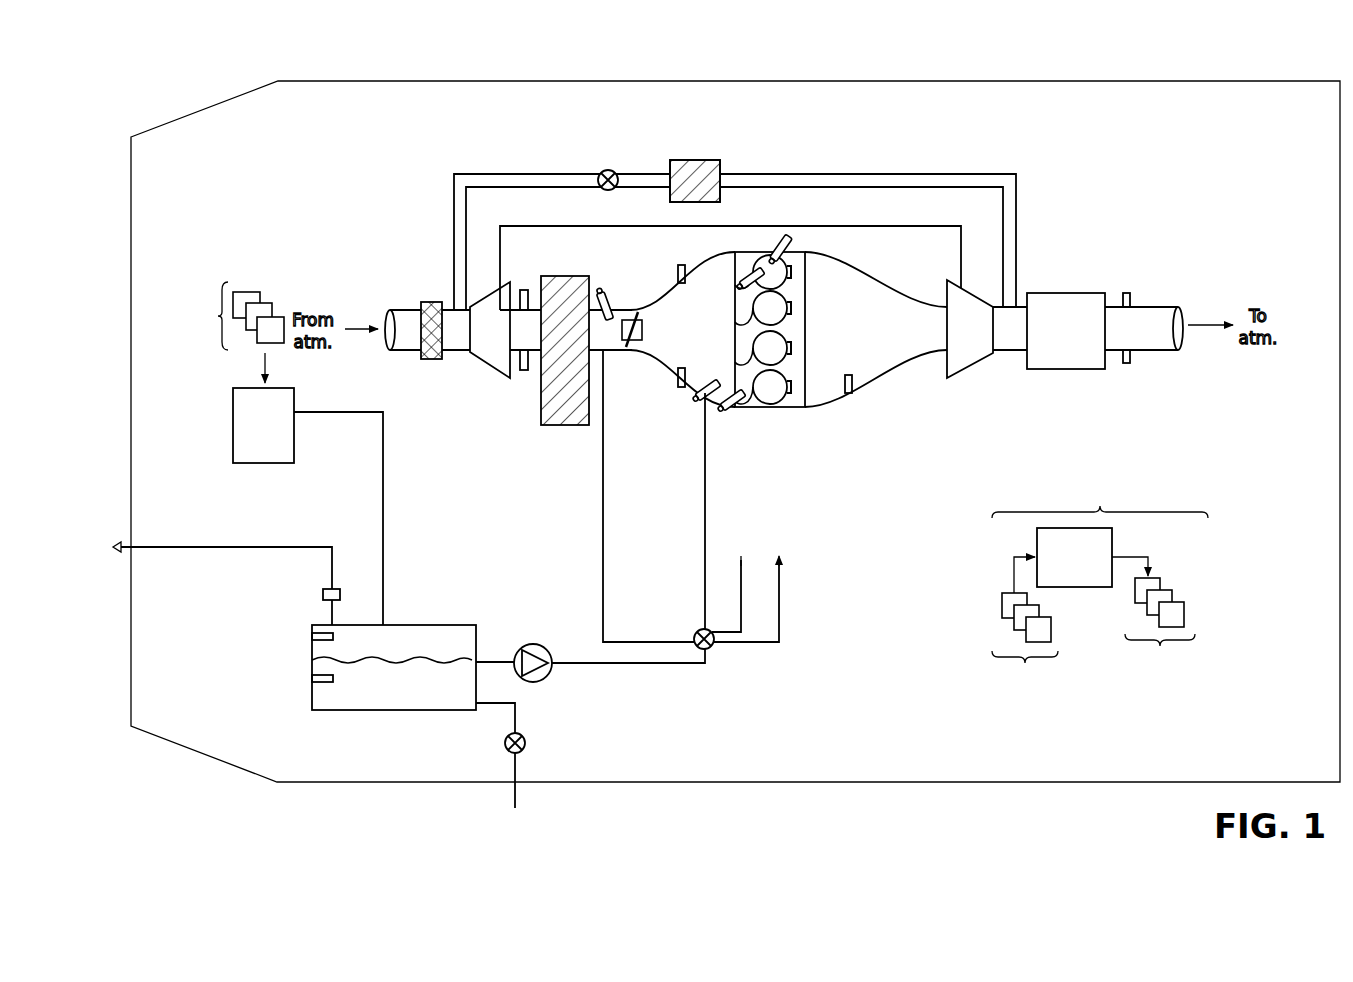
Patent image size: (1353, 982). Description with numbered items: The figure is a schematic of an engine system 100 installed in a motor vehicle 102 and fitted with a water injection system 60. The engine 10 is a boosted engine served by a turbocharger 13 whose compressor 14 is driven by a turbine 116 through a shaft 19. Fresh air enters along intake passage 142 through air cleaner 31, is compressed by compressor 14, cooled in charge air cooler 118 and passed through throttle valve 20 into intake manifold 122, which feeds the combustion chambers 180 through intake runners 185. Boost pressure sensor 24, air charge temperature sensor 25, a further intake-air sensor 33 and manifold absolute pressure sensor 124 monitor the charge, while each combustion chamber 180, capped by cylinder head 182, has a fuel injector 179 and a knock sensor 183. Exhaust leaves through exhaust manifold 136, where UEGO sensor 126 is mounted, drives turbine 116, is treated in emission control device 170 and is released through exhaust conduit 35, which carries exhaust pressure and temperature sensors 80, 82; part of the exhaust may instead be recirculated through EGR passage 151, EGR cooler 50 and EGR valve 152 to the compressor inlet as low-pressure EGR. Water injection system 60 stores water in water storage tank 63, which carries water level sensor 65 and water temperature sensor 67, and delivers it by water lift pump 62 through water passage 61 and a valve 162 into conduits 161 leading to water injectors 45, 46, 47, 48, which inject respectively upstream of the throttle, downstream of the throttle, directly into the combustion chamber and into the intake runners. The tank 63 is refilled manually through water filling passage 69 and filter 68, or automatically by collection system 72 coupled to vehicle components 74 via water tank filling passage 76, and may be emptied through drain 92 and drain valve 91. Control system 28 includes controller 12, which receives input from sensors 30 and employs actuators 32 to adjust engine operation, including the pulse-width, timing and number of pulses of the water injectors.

The motor vehicle 102 is at (737, 81).
The engine system 100 is at (1095, 133).
The engine 10 is at (758, 281).
The controller 12 is at (1074, 557).
The turbocharger 13 is at (533, 214).
The compressor 14 is at (490, 330).
The shaft 19 is at (885, 227).
The throttle valve 20 is at (643, 335).
The boost pressure sensor 24 is at (525, 370).
The air charge temperature sensor 25 is at (522, 290).
The control system 28 is at (1097, 580).
The sensors 30 is at (1025, 631).
The air cleaner 31 is at (431, 302).
The actuators 32 is at (1160, 622).
The intake manifold sensor 33 is at (678, 270).
The exhaust conduit 35 is at (1165, 307).
The water injector 45 is at (600, 295).
The water injector 46 is at (697, 400).
The water injector 47 is at (745, 288).
The water injector 48 is at (724, 407).
The EGR cooler 50 is at (700, 160).
The water injection system 60 is at (471, 545).
The water passage 61 is at (645, 664).
The water lift pump 62 is at (549, 652).
The water storage tank 63 is at (448, 625).
The water level sensor 65 is at (312, 636).
The water temperature sensor 67 is at (312, 678).
The filter 68 is at (340, 595).
The water filling passage 69 is at (255, 547).
The collection system 72 is at (263, 425).
The vehicle components 74 is at (235, 316).
The water tank filling passage 76 is at (383, 515).
The exhaust pressure sensor 80 is at (1127, 293).
The exhaust temperature sensor 82 is at (1127, 364).
The drain valve 91 is at (525, 743).
The drain 92 is at (518, 718).
The turbine 116 is at (970, 329).
The charge air cooler 118 is at (562, 276).
The intake manifold 122 is at (682, 329).
The manifold absolute pressure sensor 124 is at (680, 372).
The UEGO sensor 126 is at (851, 388).
The exhaust manifold 136 is at (876, 329).
The intake passage 142 is at (400, 350).
The EGR passage 151 is at (800, 173).
The EGR valve 152 is at (614, 172).
The conduits 161 is at (604, 527).
The valve 162 is at (712, 648).
The emission control device 170 is at (1057, 293).
The fuel injector 179 is at (794, 236).
The combustion chamber 180 is at (797, 262).
The cylinder head 182 is at (807, 328).
The knock sensor 183 is at (797, 392).
The intake runners 185 is at (737, 256).